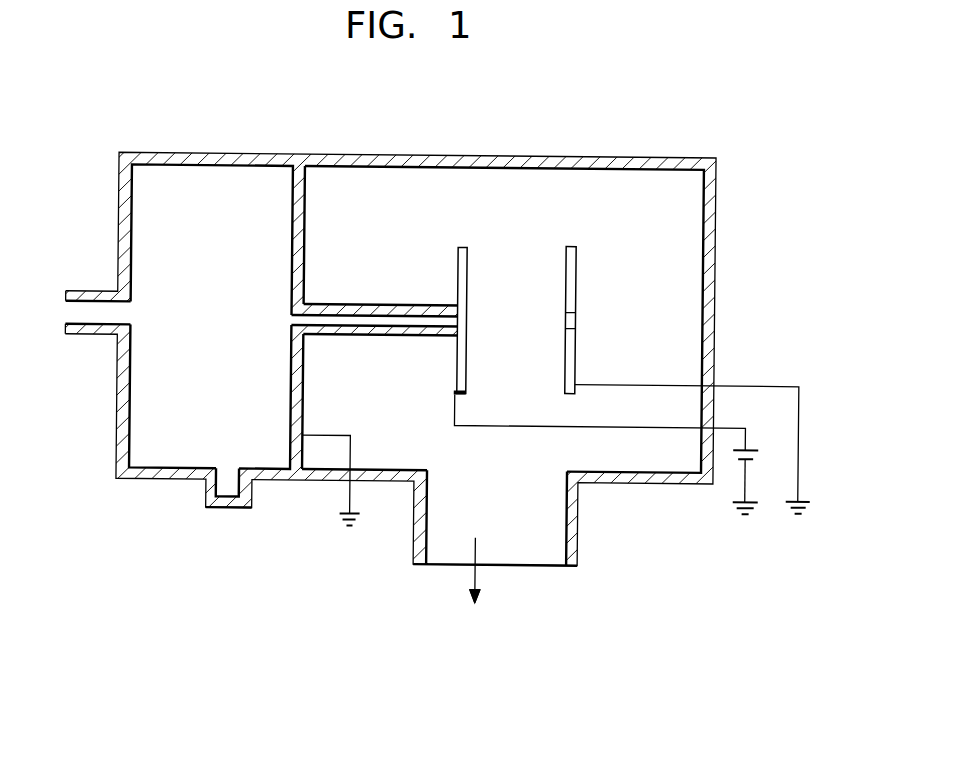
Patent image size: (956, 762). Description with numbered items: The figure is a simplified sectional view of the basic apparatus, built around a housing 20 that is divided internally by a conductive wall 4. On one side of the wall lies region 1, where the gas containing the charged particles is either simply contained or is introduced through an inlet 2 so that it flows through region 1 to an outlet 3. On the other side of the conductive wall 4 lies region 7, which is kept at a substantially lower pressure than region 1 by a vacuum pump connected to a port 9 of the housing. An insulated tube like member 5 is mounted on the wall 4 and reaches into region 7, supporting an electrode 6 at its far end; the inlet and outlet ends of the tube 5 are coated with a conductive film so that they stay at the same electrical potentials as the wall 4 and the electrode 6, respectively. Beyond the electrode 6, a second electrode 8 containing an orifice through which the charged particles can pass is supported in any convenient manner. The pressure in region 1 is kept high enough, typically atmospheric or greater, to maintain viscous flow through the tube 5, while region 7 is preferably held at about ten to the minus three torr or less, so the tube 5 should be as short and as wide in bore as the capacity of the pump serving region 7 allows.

The region 1 is at (207, 195).
The inlet 2 is at (78, 292).
The outlet 3 is at (254, 508).
The conductive wall 4 is at (312, 217).
The insulated tube like member 5 is at (407, 303).
The electrode 6 is at (468, 258).
The region 7 is at (645, 192).
The second electrode 8 is at (580, 361).
The port 9 is at (543, 548).
The housing 20 is at (295, 155).